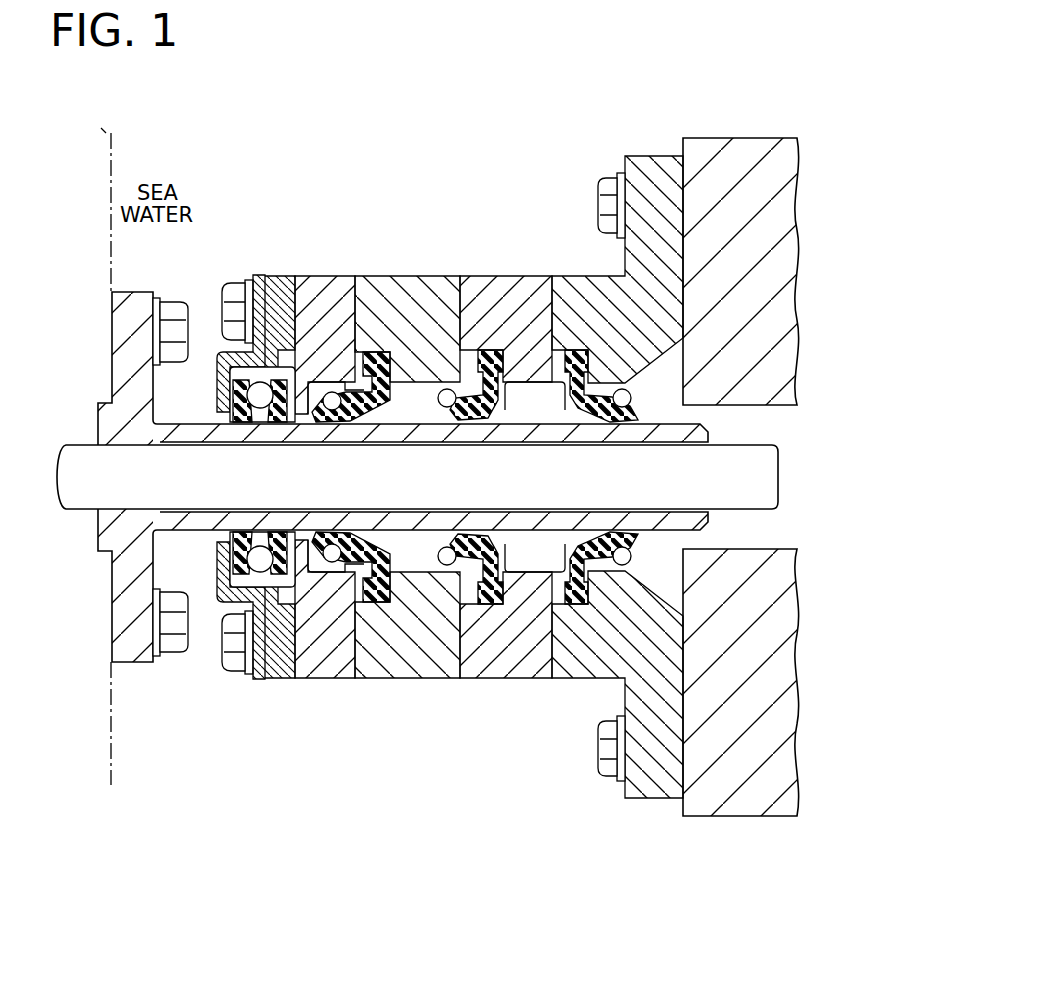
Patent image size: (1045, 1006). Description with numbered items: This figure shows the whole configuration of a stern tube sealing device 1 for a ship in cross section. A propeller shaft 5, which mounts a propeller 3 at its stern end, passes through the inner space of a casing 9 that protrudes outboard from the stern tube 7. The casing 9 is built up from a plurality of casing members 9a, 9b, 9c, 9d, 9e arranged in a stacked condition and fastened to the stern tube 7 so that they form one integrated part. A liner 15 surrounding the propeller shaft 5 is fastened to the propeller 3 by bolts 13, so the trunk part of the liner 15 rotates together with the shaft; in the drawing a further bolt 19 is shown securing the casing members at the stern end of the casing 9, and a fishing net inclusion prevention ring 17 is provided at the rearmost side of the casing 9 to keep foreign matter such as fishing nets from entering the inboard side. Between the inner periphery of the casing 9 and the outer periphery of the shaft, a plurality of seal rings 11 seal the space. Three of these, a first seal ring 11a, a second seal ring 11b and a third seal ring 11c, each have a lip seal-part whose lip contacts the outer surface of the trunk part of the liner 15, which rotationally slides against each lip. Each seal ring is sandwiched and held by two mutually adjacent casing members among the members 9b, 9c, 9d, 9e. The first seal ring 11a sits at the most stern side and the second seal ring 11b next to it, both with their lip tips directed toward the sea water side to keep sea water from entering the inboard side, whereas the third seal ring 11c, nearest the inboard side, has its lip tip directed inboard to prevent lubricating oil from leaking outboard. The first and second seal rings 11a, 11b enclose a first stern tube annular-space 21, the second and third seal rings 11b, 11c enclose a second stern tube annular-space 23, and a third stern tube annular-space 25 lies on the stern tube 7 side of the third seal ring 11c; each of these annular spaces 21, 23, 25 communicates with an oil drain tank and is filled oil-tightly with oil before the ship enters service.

The stern tube sealing device 1 is at (450, 448).
The propeller 3 is at (108, 785).
The propeller shaft 5 is at (83, 457).
The stern tube 7 is at (735, 138).
The casing 9 is at (450, 448).
The casing member 9a is at (273, 277).
The casing member 9b is at (328, 277).
The casing member 9c is at (427, 282).
The casing member 9d is at (522, 283).
The casing member 9e is at (655, 168).
The seal rings 11 is at (473, 661).
The first seal ring 11a is at (382, 602).
The second seal ring 11b is at (477, 592).
The third seal ring 11c is at (560, 592).
The bolts 13 is at (173, 303).
The liner 15 is at (133, 657).
The fishing net inclusion prevention ring 17 is at (252, 425).
The bolt 19 is at (233, 286).
The first stern tube annular-space 21 is at (412, 390).
The second stern tube annular-space 23 is at (532, 390).
The third stern tube annular-space 25 is at (653, 377).